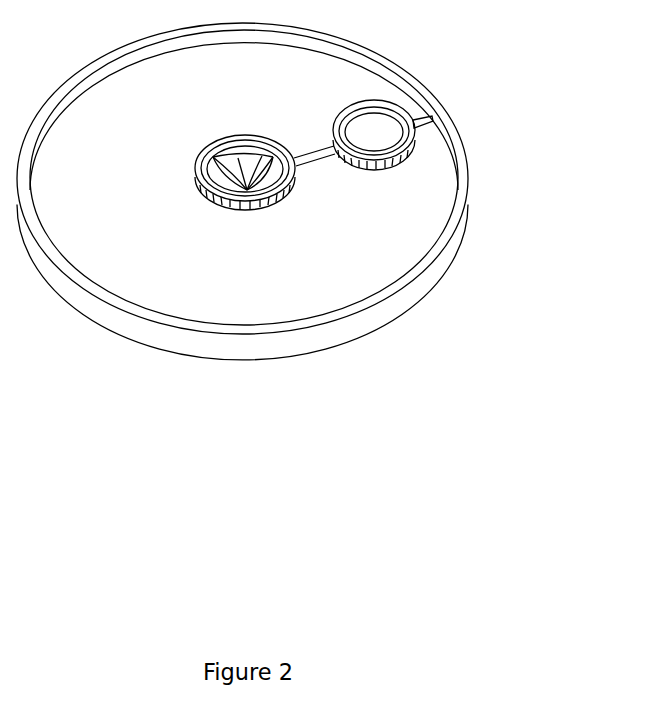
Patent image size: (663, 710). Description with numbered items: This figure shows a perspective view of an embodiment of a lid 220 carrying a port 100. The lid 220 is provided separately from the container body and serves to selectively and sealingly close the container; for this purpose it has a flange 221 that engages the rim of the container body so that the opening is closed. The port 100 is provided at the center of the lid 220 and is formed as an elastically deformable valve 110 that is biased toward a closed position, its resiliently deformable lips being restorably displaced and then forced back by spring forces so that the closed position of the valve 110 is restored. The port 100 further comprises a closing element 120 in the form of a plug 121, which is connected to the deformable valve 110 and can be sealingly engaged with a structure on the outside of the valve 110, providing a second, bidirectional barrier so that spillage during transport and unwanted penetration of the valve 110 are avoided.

The port 100 is at (360, 156).
The elastically deformable valve 110 is at (200, 185).
The closing element 120 is at (478, 132).
The plug 121 is at (377, 132).
The lid 220 is at (303, 230).
The flange 221 is at (352, 312).